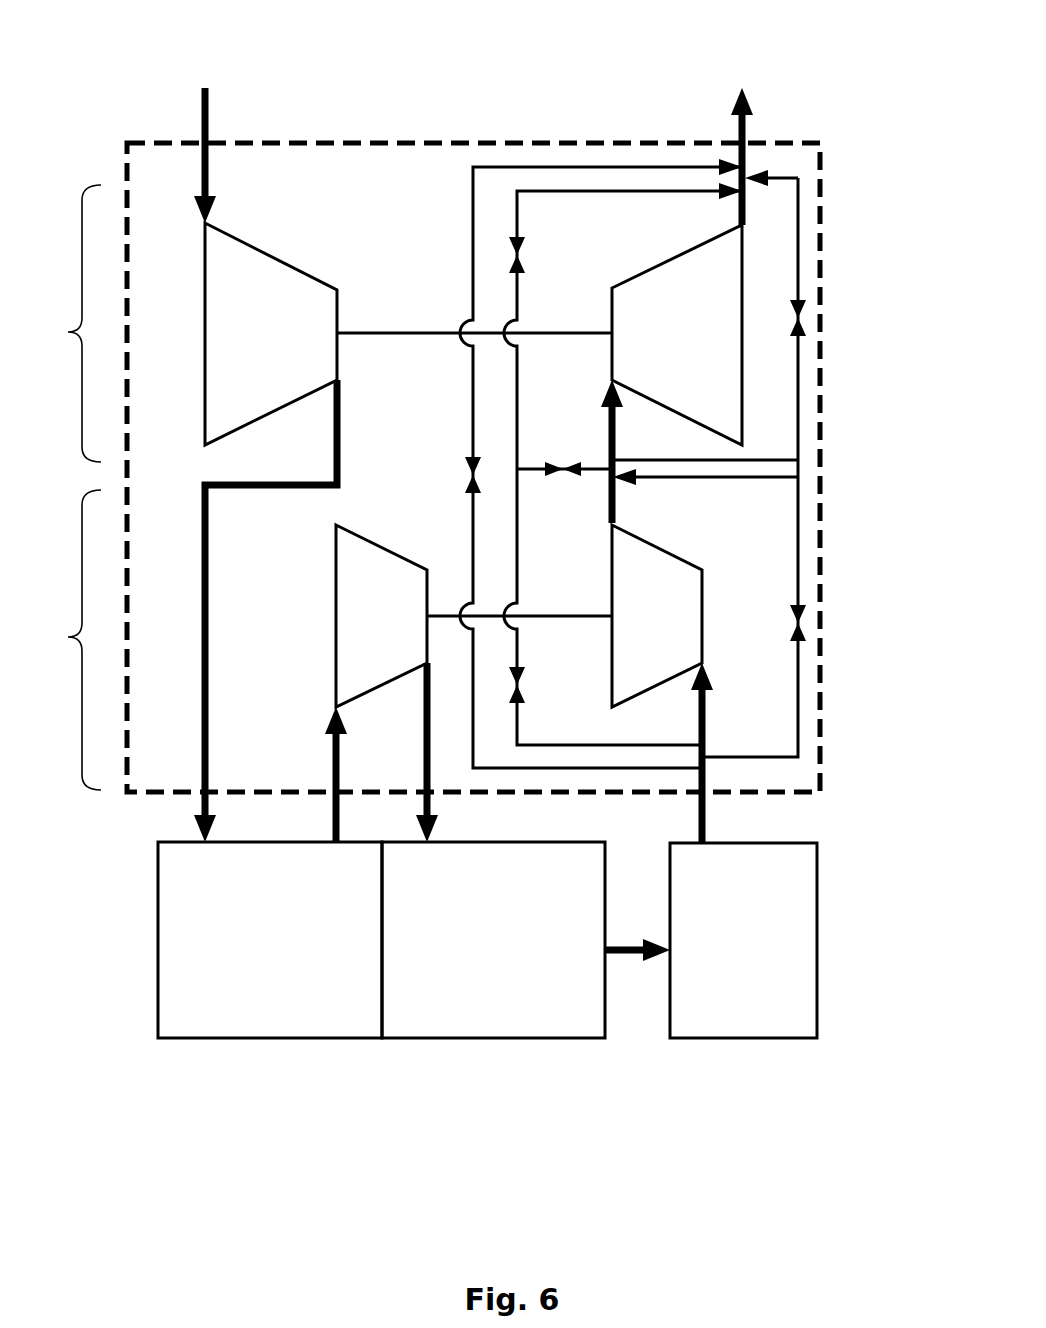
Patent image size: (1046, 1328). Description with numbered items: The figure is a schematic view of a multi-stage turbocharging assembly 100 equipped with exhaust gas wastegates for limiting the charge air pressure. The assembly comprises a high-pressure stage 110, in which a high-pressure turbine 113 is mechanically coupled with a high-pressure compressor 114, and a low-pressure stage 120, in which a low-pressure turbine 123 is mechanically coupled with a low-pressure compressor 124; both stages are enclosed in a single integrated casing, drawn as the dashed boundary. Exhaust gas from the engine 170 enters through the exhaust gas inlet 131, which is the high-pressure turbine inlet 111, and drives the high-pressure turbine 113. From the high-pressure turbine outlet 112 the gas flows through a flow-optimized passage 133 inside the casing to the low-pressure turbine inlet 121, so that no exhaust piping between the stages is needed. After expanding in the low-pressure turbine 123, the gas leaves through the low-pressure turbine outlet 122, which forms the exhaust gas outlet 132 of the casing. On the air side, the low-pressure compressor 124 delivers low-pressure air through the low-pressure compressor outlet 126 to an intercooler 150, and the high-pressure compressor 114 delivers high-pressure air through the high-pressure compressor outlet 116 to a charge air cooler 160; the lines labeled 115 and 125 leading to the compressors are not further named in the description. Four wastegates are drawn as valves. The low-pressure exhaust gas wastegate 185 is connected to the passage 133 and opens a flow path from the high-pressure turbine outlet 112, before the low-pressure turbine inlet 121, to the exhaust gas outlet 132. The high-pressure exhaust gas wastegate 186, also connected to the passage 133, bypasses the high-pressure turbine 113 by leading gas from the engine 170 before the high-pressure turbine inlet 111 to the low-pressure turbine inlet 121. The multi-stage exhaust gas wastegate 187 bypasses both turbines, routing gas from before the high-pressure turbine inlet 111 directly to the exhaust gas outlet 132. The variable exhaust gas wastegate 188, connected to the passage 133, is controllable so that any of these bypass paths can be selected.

The multi-stage turbocharging assembly 100 is at (488, 121).
The high-pressure stage 110 is at (9, 643).
The low-pressure stage 120 is at (9, 352).
The high-pressure turbine inlet 111 is at (707, 703).
The high-pressure turbine outlet 112 is at (610, 525).
The high-pressure turbine 113 is at (636, 625).
The high-pressure compressor 114 is at (359, 635).
The compressor inlet line 115 is at (333, 713).
The high-pressure compressor outlet 116 is at (422, 670).
The low-pressure turbine inlet 121 is at (610, 384).
The low-pressure turbine outlet 122 is at (745, 230).
The low-pressure turbine 123 is at (647, 348).
The low-pressure compressor 124 is at (249, 350).
The air inlet line 125 is at (210, 160).
The low-pressure compressor outlet 126 is at (340, 398).
The exhaust gas inlet 131 is at (707, 708).
The exhaust gas outlet 132 is at (743, 222).
The passage 133 is at (614, 518).
The intercooler 150 is at (265, 960).
The charge air cooler 160 is at (471, 960).
The engine 170 is at (716, 960).
The low-pressure exhaust gas wastegate 185 is at (803, 322).
The high-pressure exhaust gas wastegate 186 is at (803, 623).
The multi-stage exhaust gas wastegate 187 is at (469, 477).
The variable exhaust gas wastegate 188 is at (563, 461).